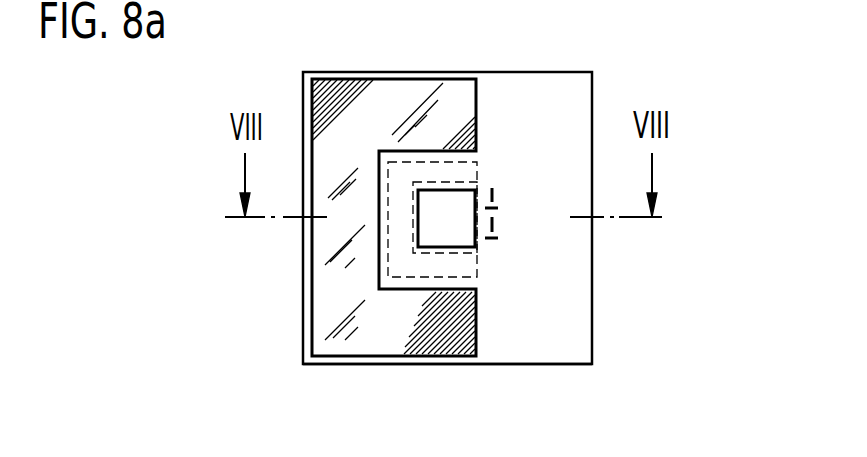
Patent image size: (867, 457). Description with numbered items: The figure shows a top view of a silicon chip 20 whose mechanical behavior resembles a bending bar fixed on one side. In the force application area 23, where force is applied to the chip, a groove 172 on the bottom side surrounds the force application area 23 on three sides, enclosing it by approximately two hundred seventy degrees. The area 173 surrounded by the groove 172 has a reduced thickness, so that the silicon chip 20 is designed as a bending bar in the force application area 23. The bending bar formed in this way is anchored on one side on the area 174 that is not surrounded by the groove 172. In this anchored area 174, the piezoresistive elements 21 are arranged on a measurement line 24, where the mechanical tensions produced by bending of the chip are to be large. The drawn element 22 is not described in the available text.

The silicon chip 20 is at (607, 332).
The piezoresistive elements 21 is at (492, 246).
The C-shaped electrode layer 22 is at (327, 92).
The force application area 23 is at (432, 228).
The measurement line 24 is at (498, 192).
The groove 172 is at (405, 263).
The area surrounded by the groove 173 is at (458, 183).
The anchored area 174 is at (568, 333).